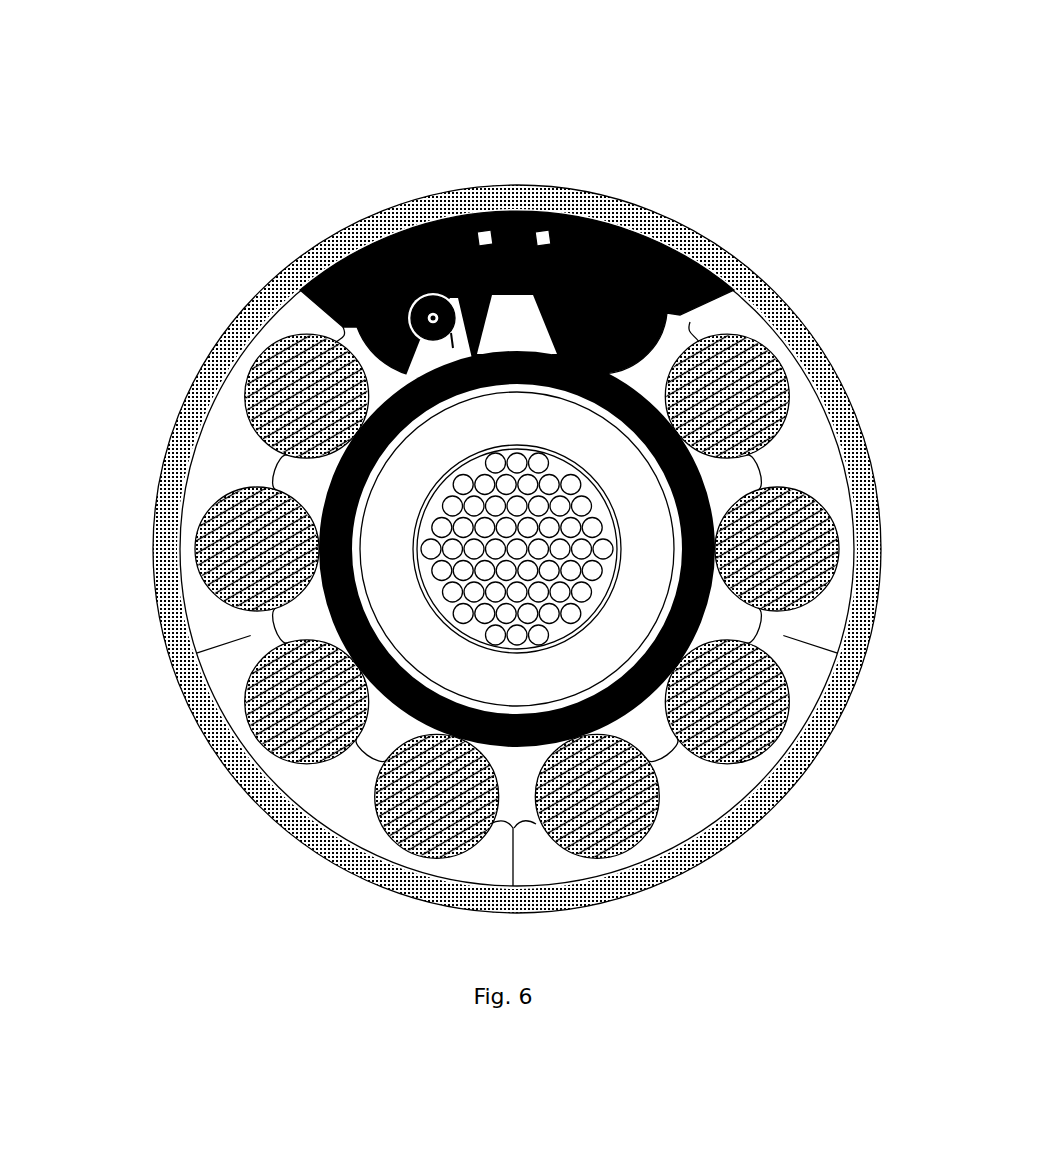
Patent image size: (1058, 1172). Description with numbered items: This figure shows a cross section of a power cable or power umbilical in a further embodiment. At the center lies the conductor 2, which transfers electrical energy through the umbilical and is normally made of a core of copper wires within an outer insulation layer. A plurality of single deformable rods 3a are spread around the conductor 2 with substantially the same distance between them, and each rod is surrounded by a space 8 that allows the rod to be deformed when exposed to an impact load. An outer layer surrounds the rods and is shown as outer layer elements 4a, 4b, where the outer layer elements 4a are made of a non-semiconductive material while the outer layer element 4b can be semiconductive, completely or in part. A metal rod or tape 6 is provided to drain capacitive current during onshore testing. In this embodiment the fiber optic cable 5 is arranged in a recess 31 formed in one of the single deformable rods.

The conductor 2 is at (390, 572).
The single deformable rod 3a is at (615, 242).
The outer layer element 4a is at (215, 473).
The outer layer element 4b is at (347, 257).
The fiber optic cable 5 is at (416, 296).
The recess 31 is at (452, 347).
The metal rod or tape 6 is at (547, 232).
The space 8 is at (740, 480).